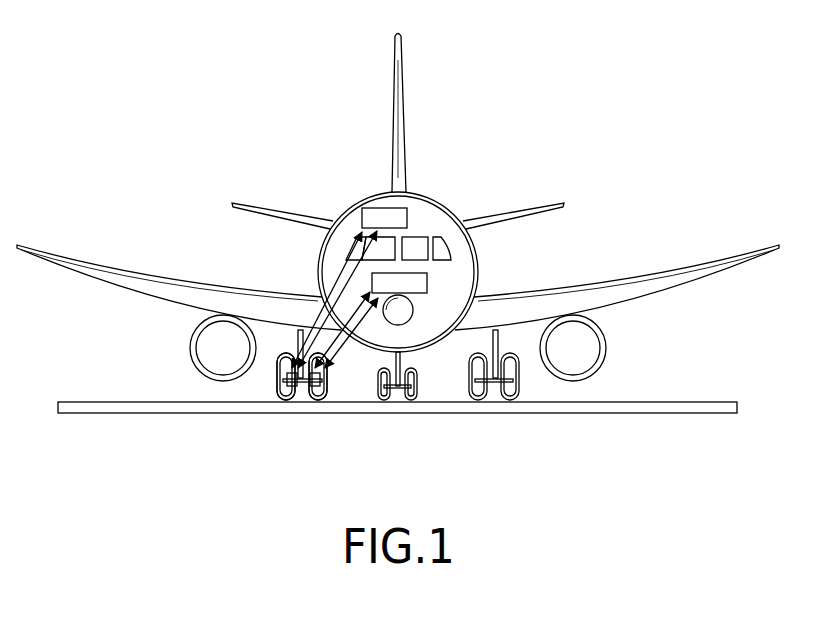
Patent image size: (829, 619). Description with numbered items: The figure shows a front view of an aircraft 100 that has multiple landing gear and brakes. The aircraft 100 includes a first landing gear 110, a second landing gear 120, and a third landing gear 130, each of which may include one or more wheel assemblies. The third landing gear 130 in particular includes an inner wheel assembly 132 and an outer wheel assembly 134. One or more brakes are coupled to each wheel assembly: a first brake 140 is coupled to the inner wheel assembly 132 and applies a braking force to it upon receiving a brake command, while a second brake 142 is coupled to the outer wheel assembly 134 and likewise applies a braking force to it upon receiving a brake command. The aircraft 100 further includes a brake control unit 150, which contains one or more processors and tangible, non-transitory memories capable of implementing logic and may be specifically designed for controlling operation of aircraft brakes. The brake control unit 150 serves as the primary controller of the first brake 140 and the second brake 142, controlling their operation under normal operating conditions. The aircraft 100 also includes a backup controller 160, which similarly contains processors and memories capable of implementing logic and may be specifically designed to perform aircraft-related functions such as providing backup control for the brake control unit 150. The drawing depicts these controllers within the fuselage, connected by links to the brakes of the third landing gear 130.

The aircraft 100 is at (263, 116).
The first landing gear 110 is at (520, 386).
The second landing gear 120 is at (418, 388).
The third landing gear 130 is at (261, 385).
The inner wheel assembly 132 is at (321, 400).
The outer wheel assembly 134 is at (288, 402).
The first brake 140 is at (332, 378).
The second brake 142 is at (286, 386).
The brake control unit (BCU) 150 is at (427, 283).
The backup controller 160 is at (407, 218).